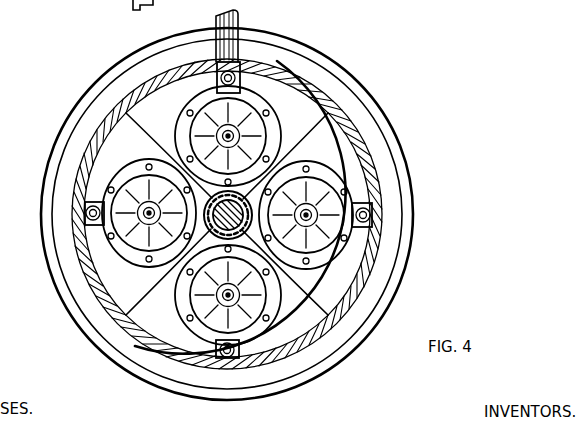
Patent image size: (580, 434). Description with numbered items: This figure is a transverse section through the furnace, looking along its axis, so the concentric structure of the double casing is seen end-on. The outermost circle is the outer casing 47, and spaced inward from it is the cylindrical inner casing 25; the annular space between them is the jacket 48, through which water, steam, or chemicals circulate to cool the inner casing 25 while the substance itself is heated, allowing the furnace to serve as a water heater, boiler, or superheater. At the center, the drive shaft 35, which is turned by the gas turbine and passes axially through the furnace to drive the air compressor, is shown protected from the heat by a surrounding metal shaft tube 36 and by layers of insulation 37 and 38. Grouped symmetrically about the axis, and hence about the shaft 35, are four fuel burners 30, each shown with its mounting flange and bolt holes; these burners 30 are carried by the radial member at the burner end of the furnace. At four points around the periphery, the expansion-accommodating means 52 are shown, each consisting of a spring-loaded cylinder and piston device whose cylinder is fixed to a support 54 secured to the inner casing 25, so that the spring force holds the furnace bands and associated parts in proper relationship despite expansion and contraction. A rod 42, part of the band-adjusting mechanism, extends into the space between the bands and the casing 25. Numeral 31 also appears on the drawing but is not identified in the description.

The casing 25 is at (322, 58).
The fuel burners 30 is at (200, 98).
The stem 31 is at (240, 19).
The drive shaft 35 is at (179, 153).
The shaft tube 36 is at (275, 143).
The insulation 37 is at (288, 272).
The insulation 38 is at (171, 270).
The rod 42 is at (131, 117).
The outer casing 47 is at (388, 120).
The jacket 48 is at (346, 101).
The expansion accommodating means 52 is at (240, 64).
The support 54 is at (238, 76).